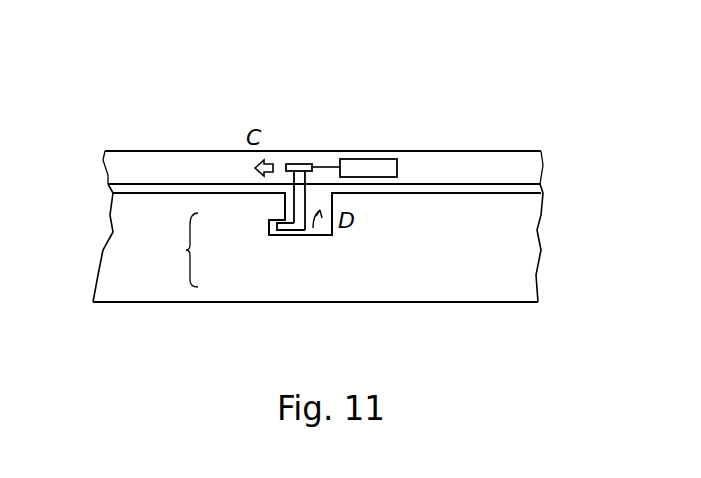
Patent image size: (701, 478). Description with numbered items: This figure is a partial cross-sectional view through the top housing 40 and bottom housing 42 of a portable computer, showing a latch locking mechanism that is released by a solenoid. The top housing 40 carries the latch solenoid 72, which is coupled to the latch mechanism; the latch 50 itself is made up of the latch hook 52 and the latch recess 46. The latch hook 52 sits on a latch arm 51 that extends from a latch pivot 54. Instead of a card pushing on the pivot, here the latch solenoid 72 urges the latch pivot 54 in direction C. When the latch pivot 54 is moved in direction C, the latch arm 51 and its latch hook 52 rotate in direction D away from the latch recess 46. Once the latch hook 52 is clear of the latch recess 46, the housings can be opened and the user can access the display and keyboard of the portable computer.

The top housing 40 is at (200, 160).
The bottom housing 42 is at (443, 285).
The latch recess 46 is at (275, 221).
The latch 50 is at (172, 250).
The latch arm 51 is at (322, 236).
The latch hook 52 is at (295, 232).
The latch pivot 54 is at (303, 160).
The latch solenoid 72 is at (385, 165).